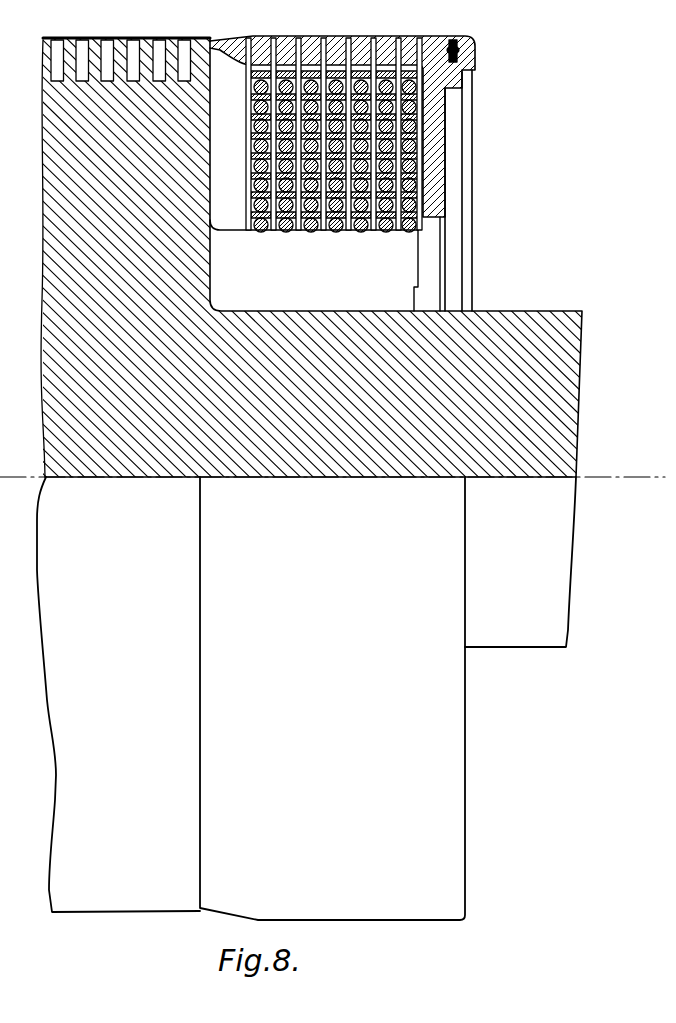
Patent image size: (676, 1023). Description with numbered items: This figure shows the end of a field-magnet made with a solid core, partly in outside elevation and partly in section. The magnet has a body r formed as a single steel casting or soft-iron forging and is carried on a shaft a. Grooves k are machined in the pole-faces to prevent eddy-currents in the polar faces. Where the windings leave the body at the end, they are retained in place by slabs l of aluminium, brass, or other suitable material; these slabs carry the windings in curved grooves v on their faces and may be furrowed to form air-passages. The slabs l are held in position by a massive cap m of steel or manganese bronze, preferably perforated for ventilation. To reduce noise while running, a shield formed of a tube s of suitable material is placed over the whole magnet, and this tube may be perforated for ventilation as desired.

The body of the magnet r is at (338, 258).
The curved grooves v is at (58, 37).
The tube s is at (134, 40).
The grooves k is at (160, 52).
The caps m is at (361, 36).
The slabs l is at (256, 134).
The shaft a is at (520, 562).